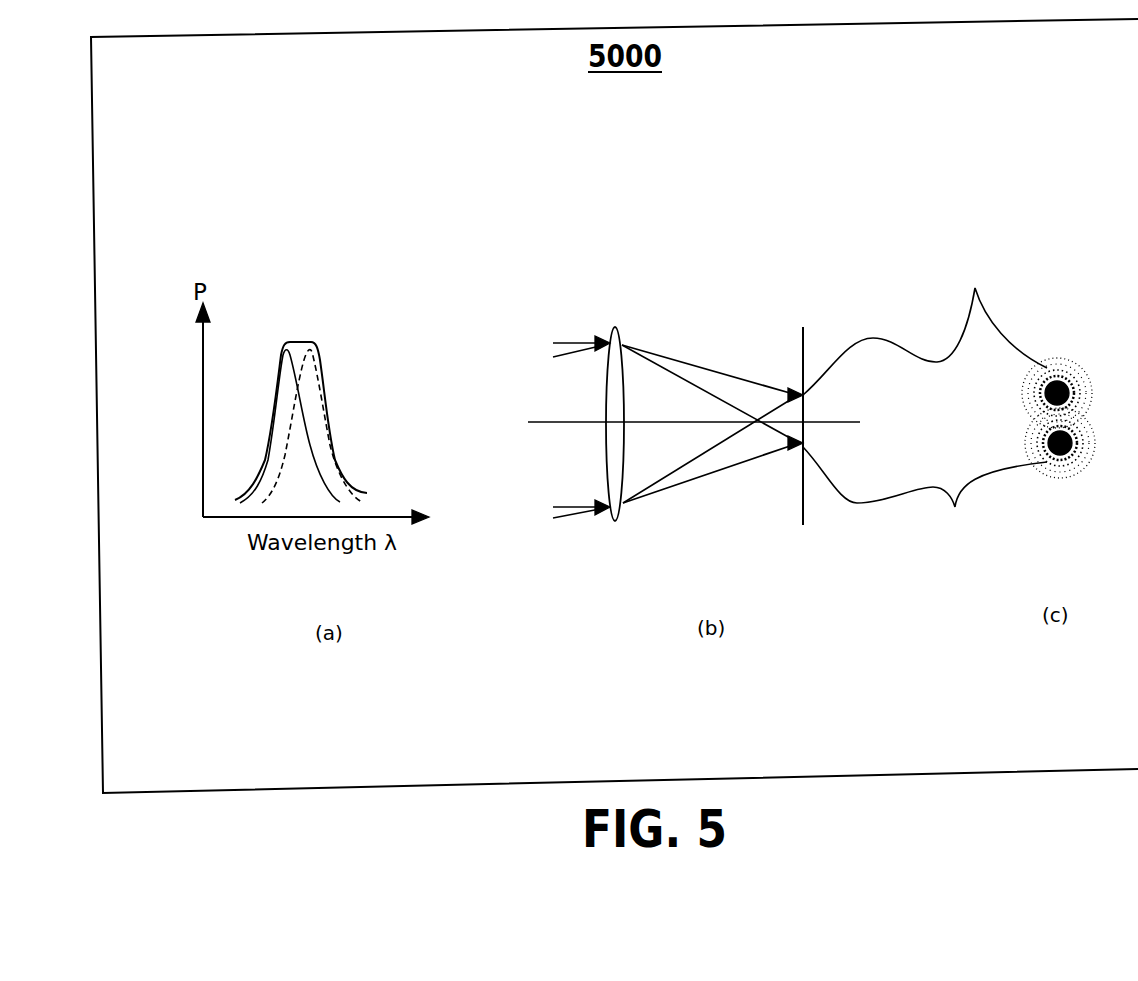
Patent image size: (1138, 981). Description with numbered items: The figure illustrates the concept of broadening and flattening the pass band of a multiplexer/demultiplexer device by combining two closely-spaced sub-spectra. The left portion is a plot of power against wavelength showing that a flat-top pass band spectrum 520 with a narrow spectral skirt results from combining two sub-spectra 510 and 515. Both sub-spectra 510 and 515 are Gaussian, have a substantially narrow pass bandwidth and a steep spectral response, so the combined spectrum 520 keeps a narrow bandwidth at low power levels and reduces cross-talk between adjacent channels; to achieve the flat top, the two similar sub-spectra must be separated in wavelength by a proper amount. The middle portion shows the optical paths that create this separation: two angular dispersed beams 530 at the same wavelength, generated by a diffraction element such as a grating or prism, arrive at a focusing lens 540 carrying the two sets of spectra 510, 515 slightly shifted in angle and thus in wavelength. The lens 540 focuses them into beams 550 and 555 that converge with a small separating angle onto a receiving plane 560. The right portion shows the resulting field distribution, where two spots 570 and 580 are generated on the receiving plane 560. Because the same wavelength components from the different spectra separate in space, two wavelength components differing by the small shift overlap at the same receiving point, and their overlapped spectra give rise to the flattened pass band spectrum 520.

The sub-spectrum 510 is at (283, 400).
The sub-spectrum 515 is at (312, 408).
The flat-top pass band spectrum 520 is at (297, 340).
The angular dispersed beams 530 is at (581, 408).
The focusing lens 540 is at (613, 327).
The focused beam 550 is at (710, 365).
The focused beam 555 is at (727, 473).
The receiving plane 560 is at (803, 327).
The spot 570 is at (975, 292).
The spot 580 is at (955, 505).